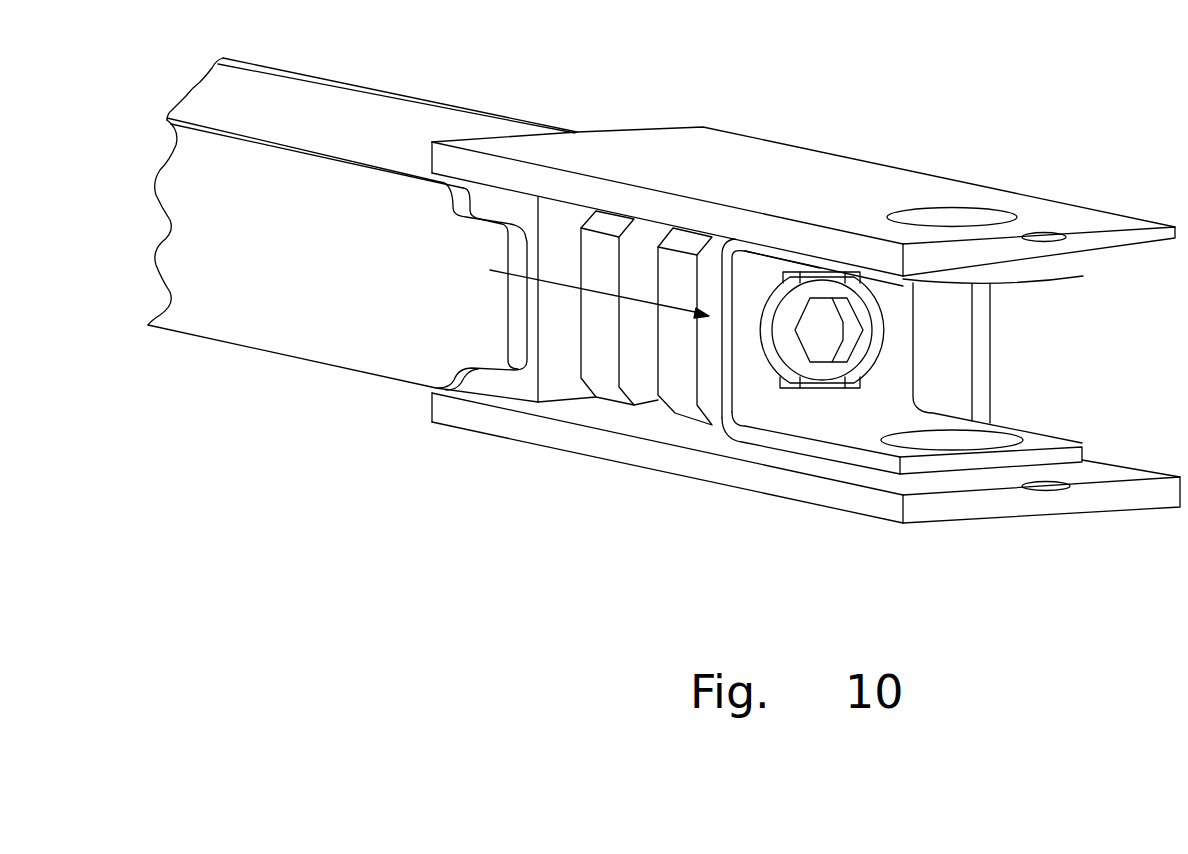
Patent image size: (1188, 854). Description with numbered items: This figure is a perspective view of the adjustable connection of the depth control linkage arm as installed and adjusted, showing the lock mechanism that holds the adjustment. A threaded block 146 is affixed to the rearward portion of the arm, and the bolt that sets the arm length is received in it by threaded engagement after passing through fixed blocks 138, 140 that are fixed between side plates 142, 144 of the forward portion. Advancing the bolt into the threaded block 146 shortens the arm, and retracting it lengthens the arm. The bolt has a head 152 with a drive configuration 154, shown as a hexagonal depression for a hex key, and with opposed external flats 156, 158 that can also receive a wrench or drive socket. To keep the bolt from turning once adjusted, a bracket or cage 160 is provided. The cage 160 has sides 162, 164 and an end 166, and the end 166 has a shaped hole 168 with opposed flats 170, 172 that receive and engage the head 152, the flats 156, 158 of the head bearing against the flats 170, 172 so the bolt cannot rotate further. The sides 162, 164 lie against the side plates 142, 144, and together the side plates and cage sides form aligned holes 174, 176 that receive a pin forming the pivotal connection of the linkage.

The fixed block 138 is at (687, 417).
The fixed block 140 is at (612, 397).
The side plate 142 is at (667, 145).
The side plate 144 is at (482, 420).
The threaded block 146 is at (515, 327).
The head 152 is at (780, 363).
The drive configuration 154 is at (825, 320).
The external flat 156 is at (836, 278).
The external flat 158 is at (855, 366).
The cage 160 is at (577, 287).
The side 162 is at (768, 250).
The side 164 is at (868, 458).
The end 166 is at (743, 367).
The shaped hole 168 is at (863, 383).
The flat 170 is at (812, 273).
The flat 172 is at (823, 380).
The aligned hole 174 is at (975, 217).
The aligned hole 176 is at (993, 442).